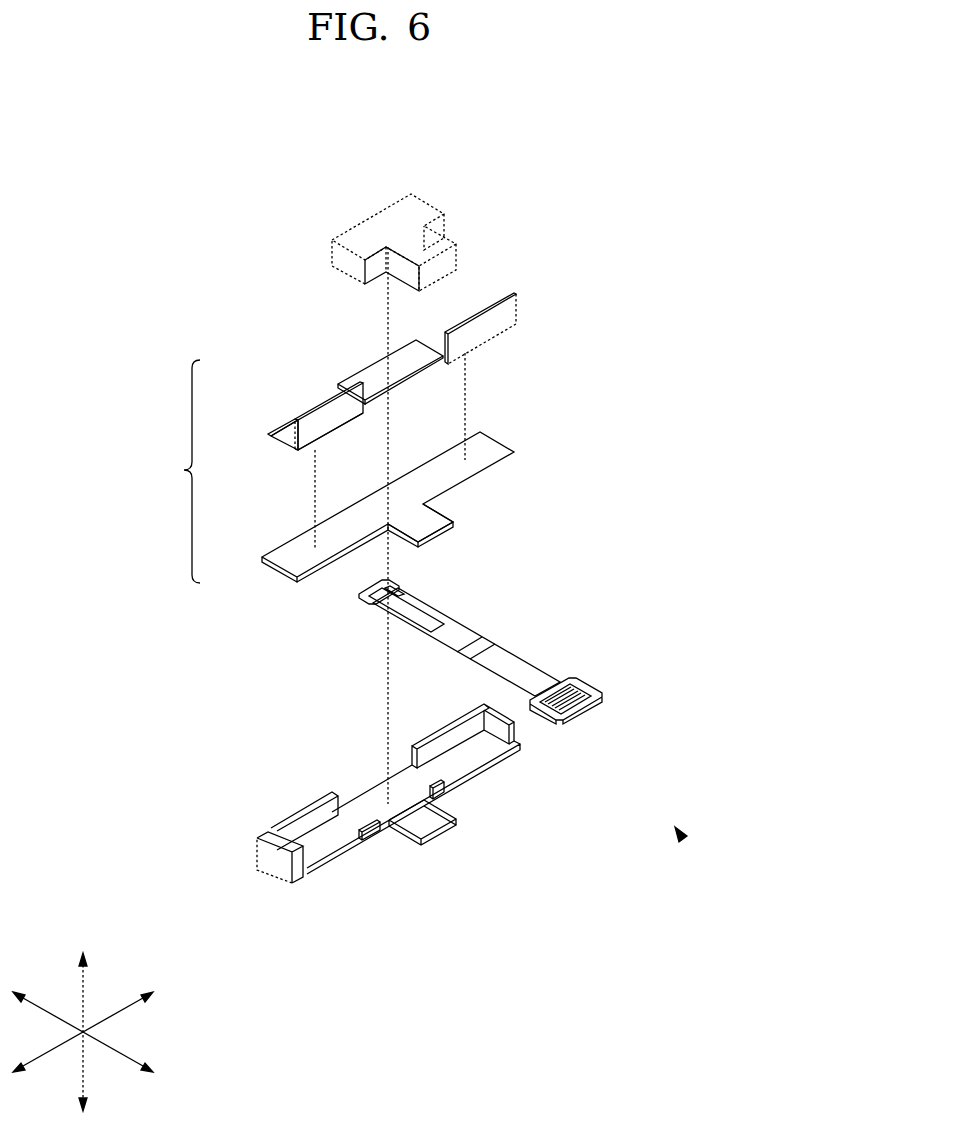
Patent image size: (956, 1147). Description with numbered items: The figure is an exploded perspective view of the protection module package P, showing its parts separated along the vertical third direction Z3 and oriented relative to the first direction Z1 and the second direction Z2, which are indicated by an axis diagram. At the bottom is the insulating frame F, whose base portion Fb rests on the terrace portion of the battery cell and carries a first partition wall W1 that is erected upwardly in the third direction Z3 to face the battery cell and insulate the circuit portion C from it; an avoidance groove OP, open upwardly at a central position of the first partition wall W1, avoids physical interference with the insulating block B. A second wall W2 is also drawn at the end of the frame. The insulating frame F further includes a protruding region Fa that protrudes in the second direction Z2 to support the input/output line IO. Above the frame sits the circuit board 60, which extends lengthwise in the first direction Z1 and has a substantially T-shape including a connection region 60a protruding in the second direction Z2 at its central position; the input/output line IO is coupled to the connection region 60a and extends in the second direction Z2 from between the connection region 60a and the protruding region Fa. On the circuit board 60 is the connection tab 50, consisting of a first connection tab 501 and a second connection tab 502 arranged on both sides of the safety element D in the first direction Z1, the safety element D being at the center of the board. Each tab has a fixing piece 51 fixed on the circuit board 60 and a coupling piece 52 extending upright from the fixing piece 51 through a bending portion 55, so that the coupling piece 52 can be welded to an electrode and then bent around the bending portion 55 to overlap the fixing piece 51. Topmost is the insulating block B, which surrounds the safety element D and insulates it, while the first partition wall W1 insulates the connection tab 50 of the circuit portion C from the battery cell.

The insulating block B is at (424, 213).
The circuit portion C is at (181, 471).
The connection tab 50 is at (369, 373).
The first connection tab 501 is at (330, 402).
The second connection tab 502 is at (498, 310).
The safety element D is at (405, 367).
The fixing piece 51 is at (270, 435).
The coupling piece 52 is at (322, 432).
The bending portion 55 is at (294, 452).
The circuit board 60 is at (495, 447).
The connection region 60a is at (427, 525).
The input/output line IO is at (550, 682).
The avoidance groove OP is at (368, 777).
The first partition wall W1 is at (303, 810).
The second wall W2 is at (262, 838).
The protruding region Fa is at (427, 825).
The base portion Fb is at (318, 850).
The insulating frame F is at (355, 816).
The protection module package P is at (683, 839).
The first direction Z1 is at (98, 1021).
The second direction Z2 is at (98, 1043).
The third direction Z3 is at (85, 1017).